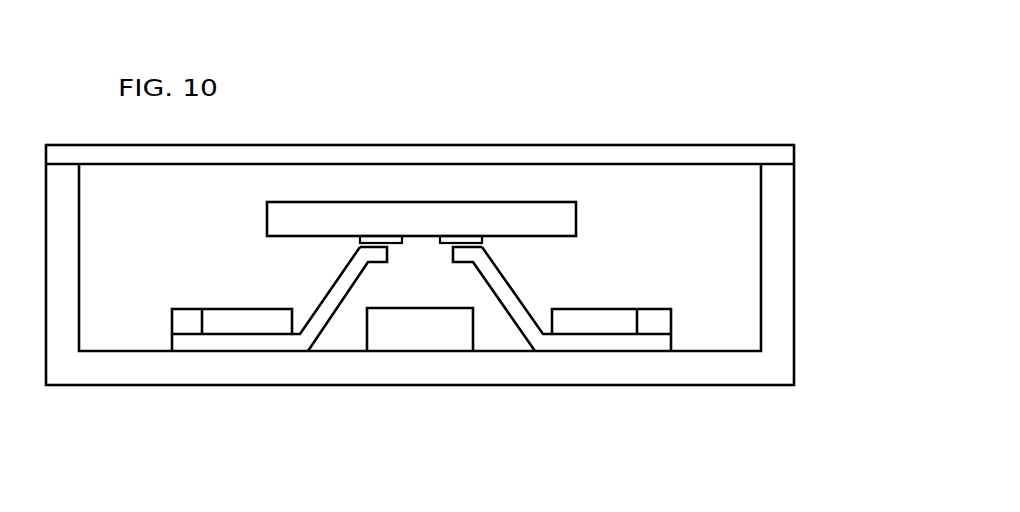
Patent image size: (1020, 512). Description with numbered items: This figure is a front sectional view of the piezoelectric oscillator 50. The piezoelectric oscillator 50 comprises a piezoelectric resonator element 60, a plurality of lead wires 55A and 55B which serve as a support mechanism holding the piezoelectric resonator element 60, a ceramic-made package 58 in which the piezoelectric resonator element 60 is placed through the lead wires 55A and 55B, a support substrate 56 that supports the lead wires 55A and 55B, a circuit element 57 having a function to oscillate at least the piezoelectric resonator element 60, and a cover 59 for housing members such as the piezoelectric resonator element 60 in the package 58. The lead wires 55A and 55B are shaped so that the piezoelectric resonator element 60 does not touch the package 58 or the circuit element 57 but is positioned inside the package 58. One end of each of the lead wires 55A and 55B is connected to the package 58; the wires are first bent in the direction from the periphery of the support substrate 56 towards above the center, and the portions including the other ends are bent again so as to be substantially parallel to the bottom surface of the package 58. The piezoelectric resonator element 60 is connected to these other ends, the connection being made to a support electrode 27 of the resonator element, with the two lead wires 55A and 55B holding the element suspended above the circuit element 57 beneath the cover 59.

The piezoelectric oscillator 50 is at (816, 276).
The support electrode 27 is at (393, 236).
The piezoelectric resonator element 60 is at (530, 219).
The cover 59 is at (732, 157).
The package 58 is at (607, 365).
The circuit element 57 is at (420, 332).
The support substrate 56 is at (233, 323).
The lead wire 55A is at (330, 303).
The lead wire 55B is at (515, 307).